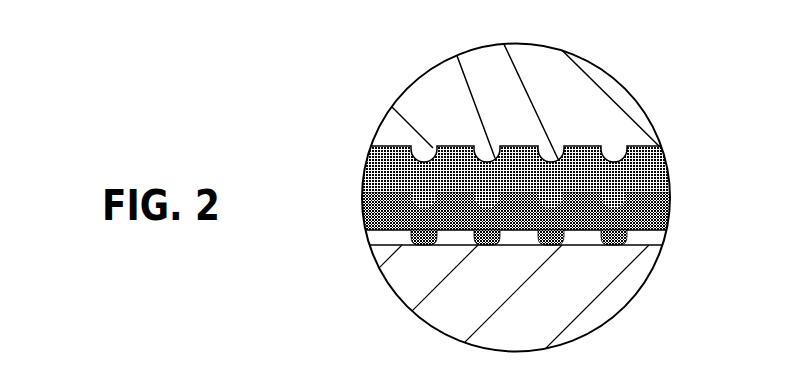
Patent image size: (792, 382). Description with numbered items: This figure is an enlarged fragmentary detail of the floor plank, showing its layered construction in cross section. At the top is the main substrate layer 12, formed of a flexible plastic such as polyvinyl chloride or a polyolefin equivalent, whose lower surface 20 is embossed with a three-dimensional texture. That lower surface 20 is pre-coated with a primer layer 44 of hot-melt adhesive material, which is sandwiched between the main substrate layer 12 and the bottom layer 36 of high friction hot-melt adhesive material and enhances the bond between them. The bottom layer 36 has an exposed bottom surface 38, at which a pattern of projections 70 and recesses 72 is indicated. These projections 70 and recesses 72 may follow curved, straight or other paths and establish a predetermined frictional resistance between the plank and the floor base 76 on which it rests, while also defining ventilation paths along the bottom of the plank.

The main substrate layer 12 is at (590, 110).
The lower surface of the main substrate layer 20 is at (667, 152).
The bottom layer of high friction material 36 is at (366, 218).
The exposed bottom surface 38 is at (663, 240).
The primer layer 44 is at (367, 170).
The projections 70 is at (416, 240).
The recesses 72 is at (381, 234).
The floor base 76 is at (628, 268).